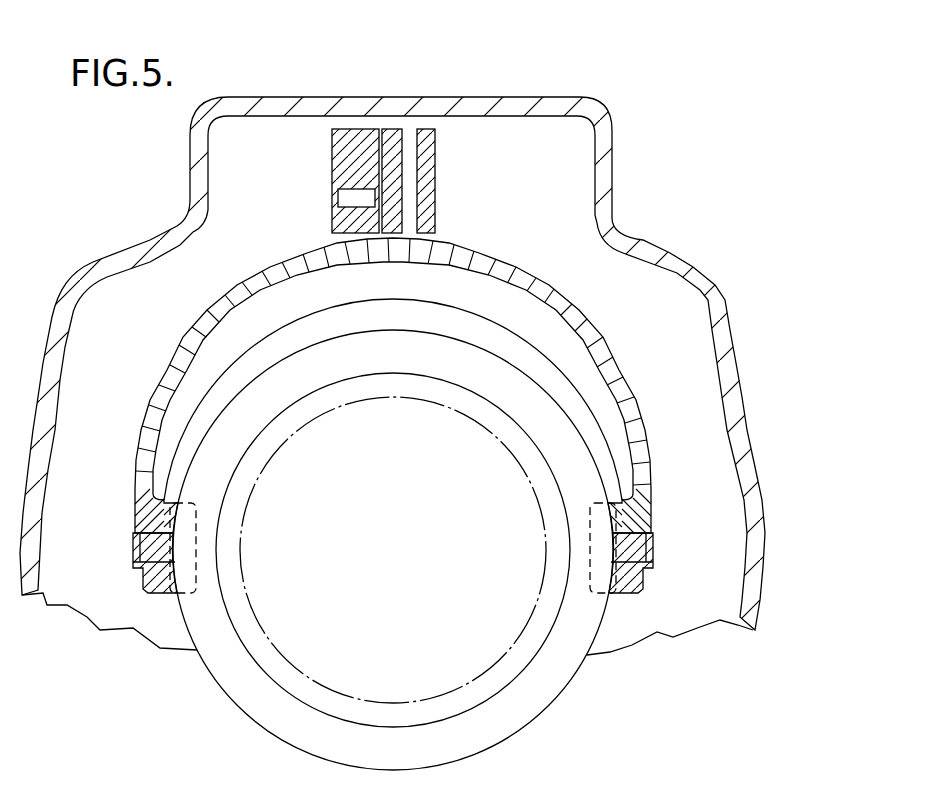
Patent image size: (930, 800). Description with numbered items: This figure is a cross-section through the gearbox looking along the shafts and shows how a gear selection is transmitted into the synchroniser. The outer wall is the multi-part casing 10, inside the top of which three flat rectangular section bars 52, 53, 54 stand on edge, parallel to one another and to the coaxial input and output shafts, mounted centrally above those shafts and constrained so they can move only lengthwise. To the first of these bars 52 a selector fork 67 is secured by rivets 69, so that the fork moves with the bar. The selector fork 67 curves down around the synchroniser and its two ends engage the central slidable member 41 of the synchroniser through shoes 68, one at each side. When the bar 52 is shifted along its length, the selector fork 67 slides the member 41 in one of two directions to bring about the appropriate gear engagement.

The casing 10 is at (243, 107).
The slidable member 41 is at (197, 632).
The bar 52 is at (355, 143).
The bar 53 is at (392, 142).
The bar 54 is at (428, 145).
The selector fork 67 is at (230, 300).
The shoes 68 is at (180, 558).
The rivets 69 is at (336, 197).